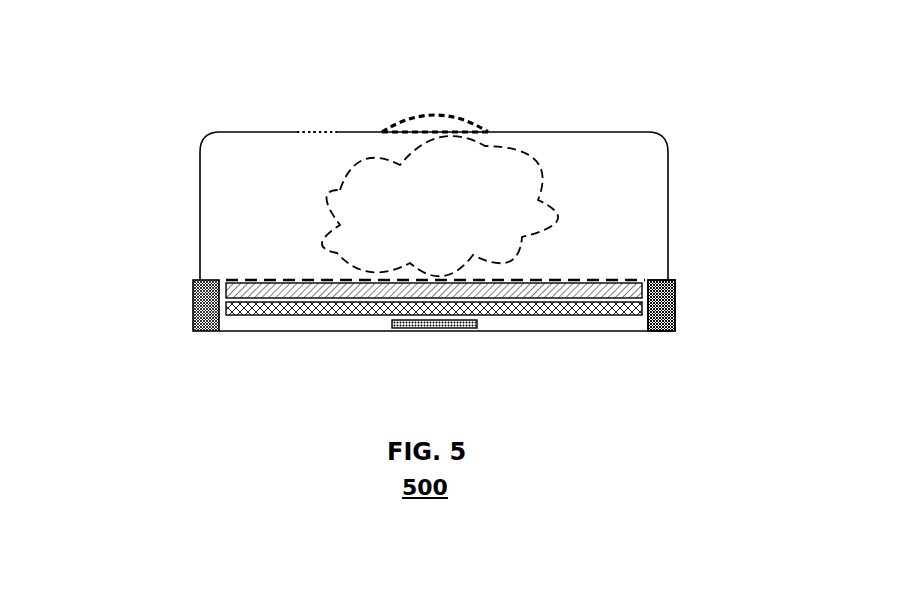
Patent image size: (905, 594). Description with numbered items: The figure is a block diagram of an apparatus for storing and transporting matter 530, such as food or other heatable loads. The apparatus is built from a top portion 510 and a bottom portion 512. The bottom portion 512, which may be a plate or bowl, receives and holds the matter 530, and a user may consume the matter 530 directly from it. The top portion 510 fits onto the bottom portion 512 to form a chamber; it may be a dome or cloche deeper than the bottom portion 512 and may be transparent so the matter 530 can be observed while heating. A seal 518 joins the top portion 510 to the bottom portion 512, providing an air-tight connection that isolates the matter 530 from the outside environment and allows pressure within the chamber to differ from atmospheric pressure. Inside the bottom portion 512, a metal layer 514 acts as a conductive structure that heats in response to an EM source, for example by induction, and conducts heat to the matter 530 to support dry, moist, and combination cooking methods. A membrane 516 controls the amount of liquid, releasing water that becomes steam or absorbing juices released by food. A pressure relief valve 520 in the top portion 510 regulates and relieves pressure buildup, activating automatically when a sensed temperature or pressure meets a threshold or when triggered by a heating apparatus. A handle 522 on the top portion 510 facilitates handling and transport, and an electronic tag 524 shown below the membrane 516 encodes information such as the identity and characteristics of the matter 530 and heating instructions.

The top portion 510 is at (145, 133).
The bottom portion 512 is at (145, 282).
The metal layer 514 is at (640, 283).
The membrane 516 is at (619, 314).
The seal 518 is at (675, 305).
The pressure relief valve 520 is at (316, 108).
The handle 522 is at (490, 131).
The electronic tag 524 is at (432, 331).
The matter 530 is at (453, 222).